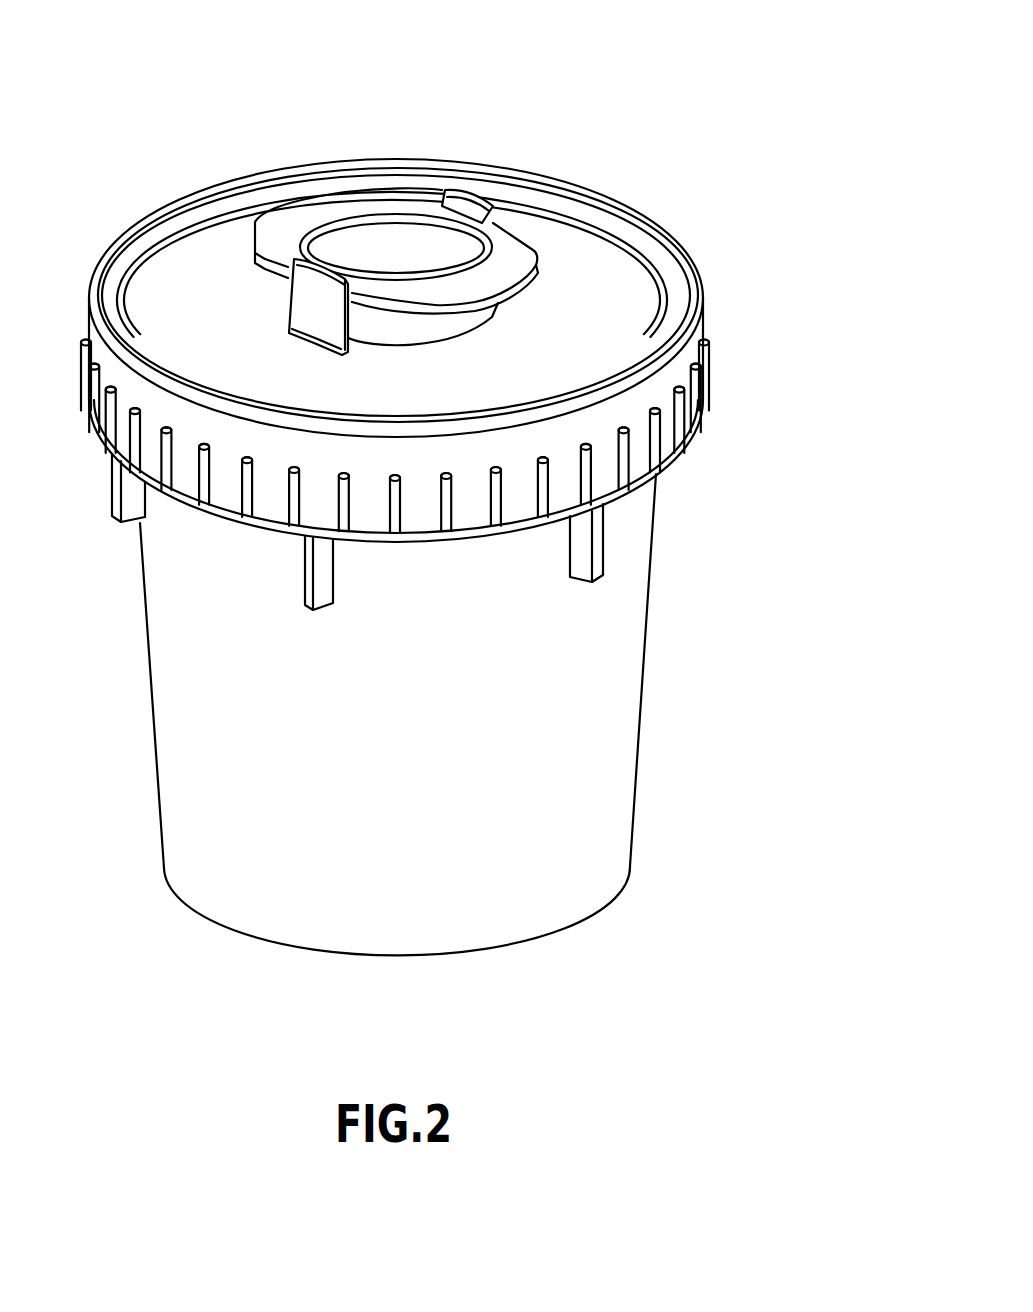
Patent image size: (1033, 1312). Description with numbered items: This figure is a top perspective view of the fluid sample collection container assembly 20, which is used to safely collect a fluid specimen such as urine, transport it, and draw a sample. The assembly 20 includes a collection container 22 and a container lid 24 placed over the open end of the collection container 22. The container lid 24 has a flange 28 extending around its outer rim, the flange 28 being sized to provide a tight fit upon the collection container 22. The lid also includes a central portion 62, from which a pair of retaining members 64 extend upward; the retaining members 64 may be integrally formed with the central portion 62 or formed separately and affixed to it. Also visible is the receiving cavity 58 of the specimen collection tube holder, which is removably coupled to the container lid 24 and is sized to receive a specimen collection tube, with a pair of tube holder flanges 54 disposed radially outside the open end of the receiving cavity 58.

The fluid sample collection container assembly 20 is at (696, 105).
The collection container 22 is at (651, 665).
The container lid 24 is at (708, 294).
The flange 28 is at (152, 419).
The tube holder flanges 54 is at (296, 222).
The receiving cavity 58 is at (364, 243).
The central portion 62 is at (193, 304).
The retaining members 64 is at (462, 203).